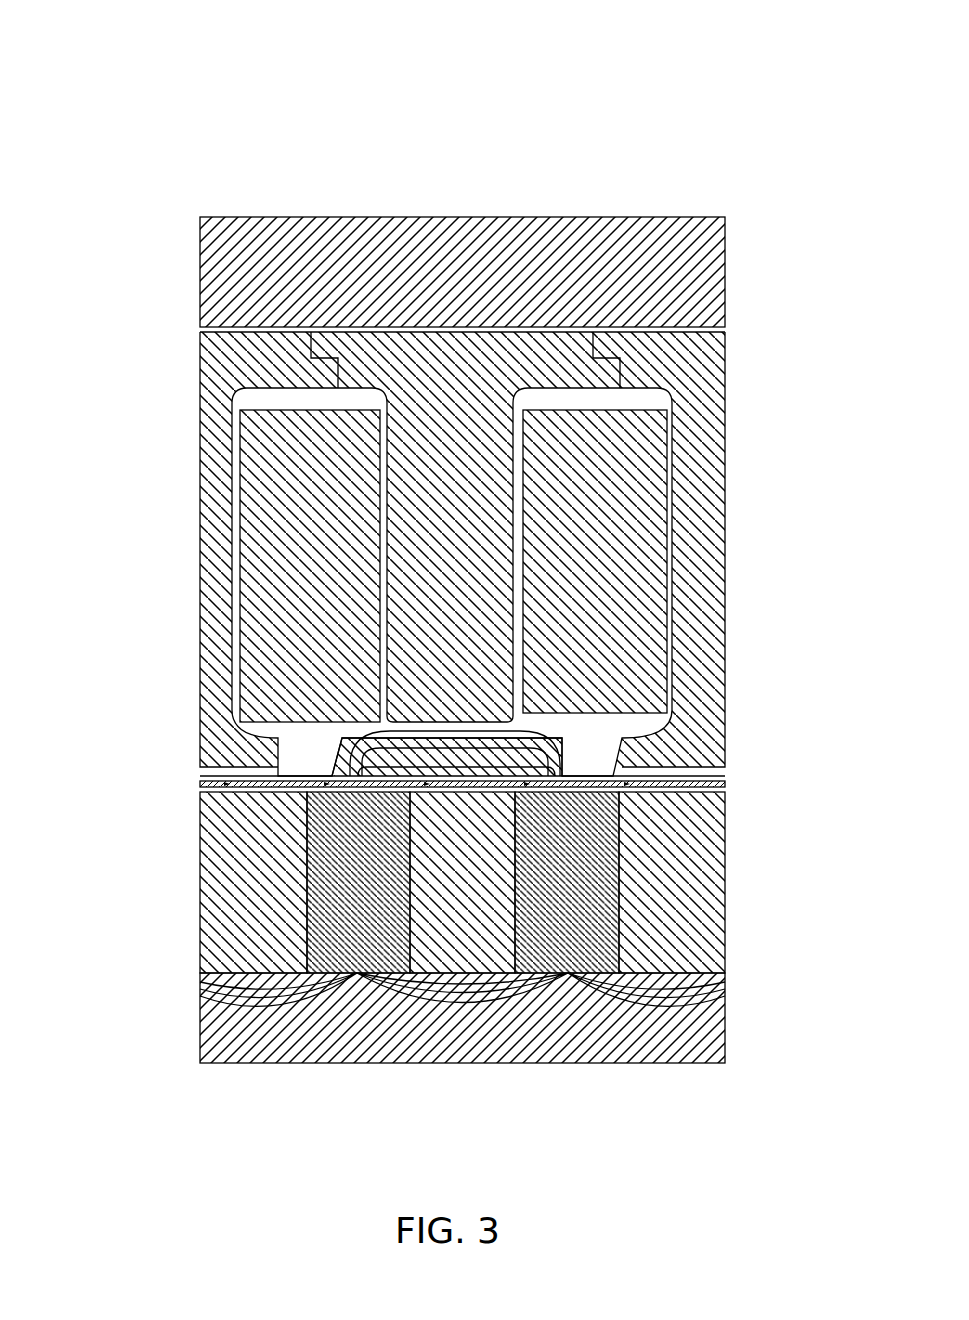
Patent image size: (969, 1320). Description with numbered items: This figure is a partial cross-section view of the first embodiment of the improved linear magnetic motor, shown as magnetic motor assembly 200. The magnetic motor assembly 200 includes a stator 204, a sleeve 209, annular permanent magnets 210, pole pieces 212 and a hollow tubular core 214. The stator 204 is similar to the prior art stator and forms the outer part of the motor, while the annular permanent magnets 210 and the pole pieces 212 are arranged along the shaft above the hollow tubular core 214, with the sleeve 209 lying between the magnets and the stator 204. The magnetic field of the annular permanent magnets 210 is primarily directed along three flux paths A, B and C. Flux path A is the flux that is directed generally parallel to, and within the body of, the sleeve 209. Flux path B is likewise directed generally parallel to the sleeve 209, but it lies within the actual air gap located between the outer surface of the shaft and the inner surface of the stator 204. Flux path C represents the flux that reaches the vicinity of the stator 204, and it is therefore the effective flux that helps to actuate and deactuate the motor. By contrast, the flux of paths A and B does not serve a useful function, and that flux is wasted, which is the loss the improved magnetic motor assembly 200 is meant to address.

The magnetic motor assembly 200 is at (463, 582).
The stator 204 is at (537, 496).
The sleeve 209 is at (388, 764).
The annular permanent magnets 210 is at (451, 975).
The pole pieces 212 is at (484, 967).
The hollow tubular core 214 is at (537, 1018).
The flux path A is at (560, 848).
The flux path B is at (548, 778).
The flux path C is at (560, 848).